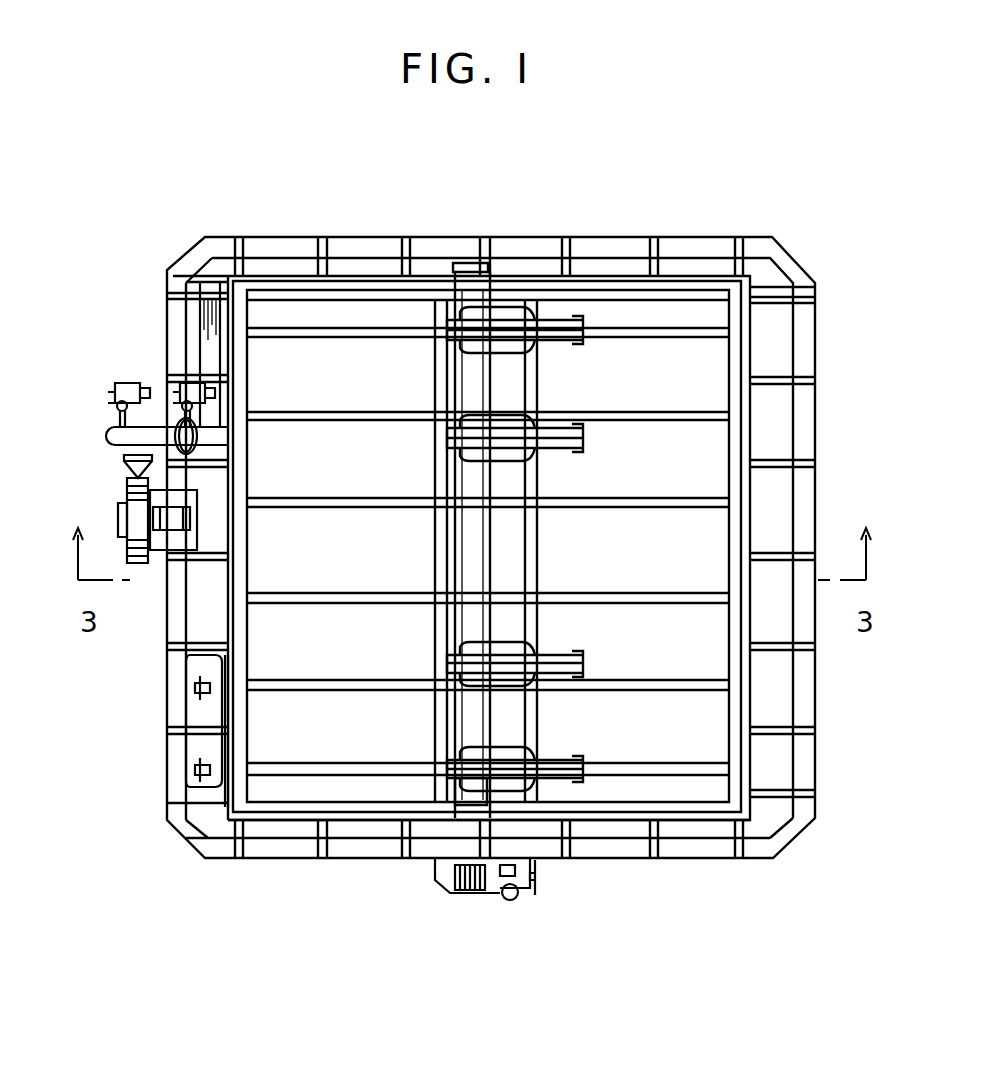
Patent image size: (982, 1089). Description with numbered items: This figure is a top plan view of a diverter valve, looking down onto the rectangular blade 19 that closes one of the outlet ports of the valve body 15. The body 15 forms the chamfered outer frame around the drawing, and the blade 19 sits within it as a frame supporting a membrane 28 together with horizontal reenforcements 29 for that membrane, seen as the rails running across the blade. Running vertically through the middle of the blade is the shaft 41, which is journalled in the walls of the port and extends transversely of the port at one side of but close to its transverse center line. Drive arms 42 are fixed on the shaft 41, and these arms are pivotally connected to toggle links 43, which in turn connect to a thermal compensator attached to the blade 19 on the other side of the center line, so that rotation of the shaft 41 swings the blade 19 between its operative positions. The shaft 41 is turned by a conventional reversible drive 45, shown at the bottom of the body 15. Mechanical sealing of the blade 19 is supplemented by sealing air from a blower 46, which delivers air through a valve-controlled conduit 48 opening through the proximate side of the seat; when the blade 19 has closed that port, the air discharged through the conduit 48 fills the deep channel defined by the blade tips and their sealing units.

The body 15 is at (323, 858).
The blade 19 is at (683, 790).
The membrane 28 is at (662, 395).
The reenforcements 29 is at (344, 338).
The shaft 41 is at (493, 318).
The drive arms 42 is at (553, 665).
The toggle links 43 is at (553, 770).
The reversible drive 45 is at (458, 895).
The blower 46 is at (125, 489).
The conduit 48 is at (158, 432).